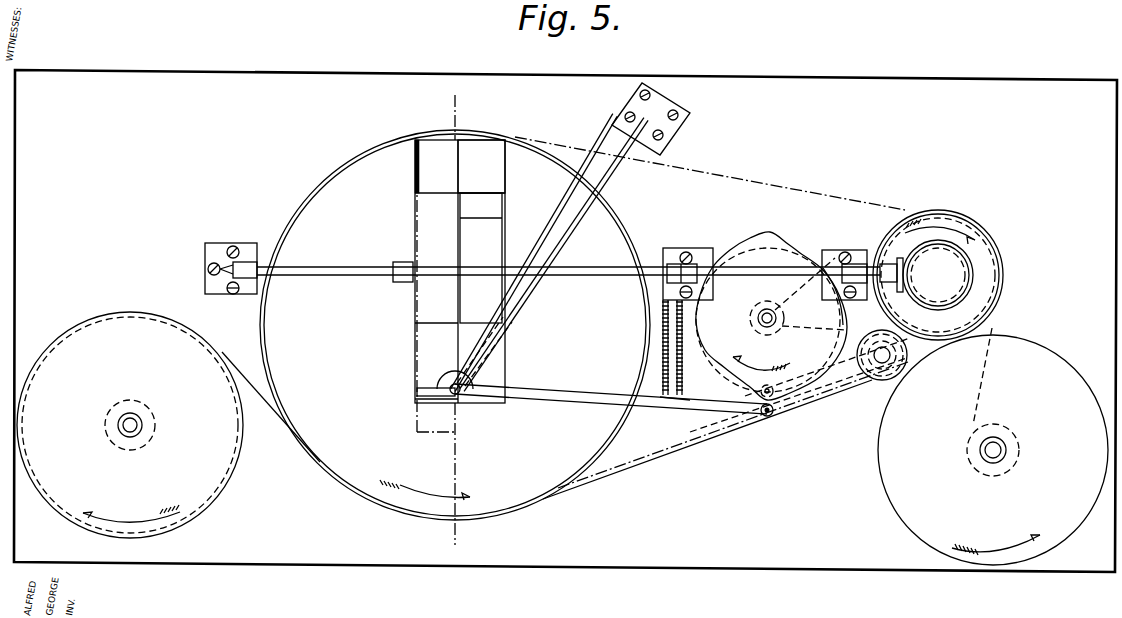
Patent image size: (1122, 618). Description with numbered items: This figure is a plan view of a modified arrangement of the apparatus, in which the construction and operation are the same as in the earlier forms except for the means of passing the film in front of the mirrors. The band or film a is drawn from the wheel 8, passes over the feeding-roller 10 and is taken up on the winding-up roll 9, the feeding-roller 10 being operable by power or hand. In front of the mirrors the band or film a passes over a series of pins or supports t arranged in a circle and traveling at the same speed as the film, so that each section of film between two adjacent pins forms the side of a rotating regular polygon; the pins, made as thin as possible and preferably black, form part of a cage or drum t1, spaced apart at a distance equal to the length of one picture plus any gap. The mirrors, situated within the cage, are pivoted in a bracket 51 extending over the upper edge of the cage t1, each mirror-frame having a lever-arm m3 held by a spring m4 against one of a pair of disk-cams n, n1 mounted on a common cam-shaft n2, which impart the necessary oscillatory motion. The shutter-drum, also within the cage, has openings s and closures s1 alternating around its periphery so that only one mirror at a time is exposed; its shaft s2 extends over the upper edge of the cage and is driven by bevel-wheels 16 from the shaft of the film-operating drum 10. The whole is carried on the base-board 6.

The base-board 6 is at (565, 321).
The wheel 8 is at (130, 425).
The winding-up roll 9 is at (993, 446).
The feeding-roller 10 is at (990, 258).
The bevel-wheels 16 is at (938, 275).
The bracket 51 is at (572, 240).
The openings s is at (512, 208).
The closures s1 is at (441, 202).
The shaft s2 is at (333, 268).
The pins or supports t is at (640, 218).
The cage or drum t1 is at (455, 320).
The band or film a is at (255, 393).
The disk-cam n is at (771, 316).
The disk-cam n1 is at (816, 364).
The cam-shaft n2 is at (776, 316).
The lever-arm m3 is at (688, 402).
The spring m4 is at (677, 347).